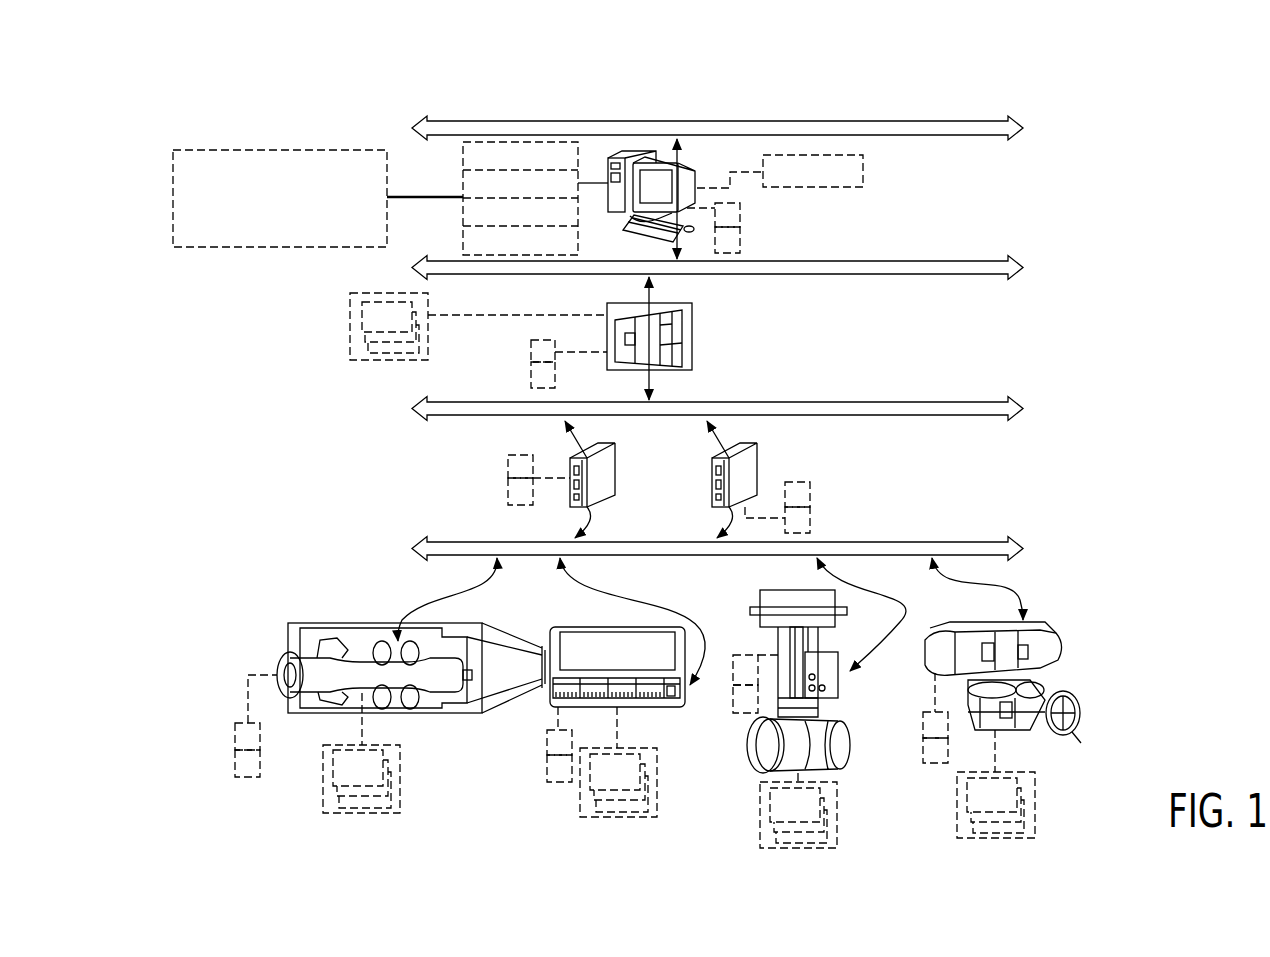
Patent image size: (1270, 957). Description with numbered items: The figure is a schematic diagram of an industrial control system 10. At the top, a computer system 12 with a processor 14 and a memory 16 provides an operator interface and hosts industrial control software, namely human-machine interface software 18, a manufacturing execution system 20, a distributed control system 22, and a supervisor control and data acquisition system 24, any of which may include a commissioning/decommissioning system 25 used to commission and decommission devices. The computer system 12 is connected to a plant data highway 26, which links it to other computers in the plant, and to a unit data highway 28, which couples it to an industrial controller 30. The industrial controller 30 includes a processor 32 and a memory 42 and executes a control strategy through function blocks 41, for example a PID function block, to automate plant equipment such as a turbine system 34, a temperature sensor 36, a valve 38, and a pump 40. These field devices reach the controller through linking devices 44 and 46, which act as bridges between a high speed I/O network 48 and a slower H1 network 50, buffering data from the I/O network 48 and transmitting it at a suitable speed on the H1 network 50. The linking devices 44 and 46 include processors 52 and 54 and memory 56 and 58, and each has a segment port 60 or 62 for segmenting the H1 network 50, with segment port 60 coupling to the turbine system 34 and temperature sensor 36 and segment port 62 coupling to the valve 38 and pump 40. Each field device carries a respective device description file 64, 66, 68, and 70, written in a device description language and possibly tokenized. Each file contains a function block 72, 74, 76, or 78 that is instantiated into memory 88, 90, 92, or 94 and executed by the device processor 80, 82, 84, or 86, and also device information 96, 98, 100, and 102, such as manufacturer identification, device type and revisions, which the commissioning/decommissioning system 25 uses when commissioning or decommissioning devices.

The industrial control system 10 is at (1096, 132).
The computer system 12 is at (700, 184).
The processor 14 is at (740, 215).
The memory 16 is at (740, 240).
The human-machine interface (HMI) software 18 is at (463, 158).
The manufacturing execution system (MES) 20 is at (463, 186).
The distributed control system (DCS) 22 is at (463, 212).
The supervisor control and data acquisition (SCADA) system 24 is at (463, 240).
The commissioning/decommissioning system 25 is at (278, 150).
The plant data highway 26 is at (1021, 121).
The unit data highway 28 is at (1021, 261).
The industrial controller 30 is at (692, 335).
The processor 32 is at (531, 351).
The turbine system 34 is at (438, 722).
The temperature sensor 36 is at (647, 707).
The valve 38 is at (822, 705).
The pump 40 is at (1080, 723).
The function blocks 41 is at (418, 320).
The memory 42 is at (531, 375).
The linking device 44 is at (606, 473).
The linking device 46 is at (748, 463).
The I/O network 48 is at (1021, 415).
The H1 network 50 is at (1021, 543).
The processor 52 is at (508, 466).
The processor 54 is at (810, 493).
The memory 56 is at (508, 491).
The memory 58 is at (810, 521).
The segment port 60 is at (566, 506).
The segment port 62 is at (706, 506).
The device description (DD) file 64 is at (400, 798).
The device description (DD) file 66 is at (657, 800).
The device description (DD) file 68 is at (837, 801).
The device description (DD) file 70 is at (1035, 825).
The function block 72 is at (390, 778).
The function block 74 is at (648, 782).
The function block 76 is at (770, 806).
The function block 78 is at (1033, 800).
The processor 80 is at (235, 740).
The processor 82 is at (547, 748).
The processor 84 is at (745, 655).
The processor 86 is at (923, 725).
The memory 88 is at (235, 762).
The memory 90 is at (547, 767).
The memory 92 is at (733, 700).
The memory 94 is at (923, 750).
The device information 96 is at (339, 803).
The device information 98 is at (596, 806).
The device information 100 is at (865, 172).
The device information 102 is at (970, 828).